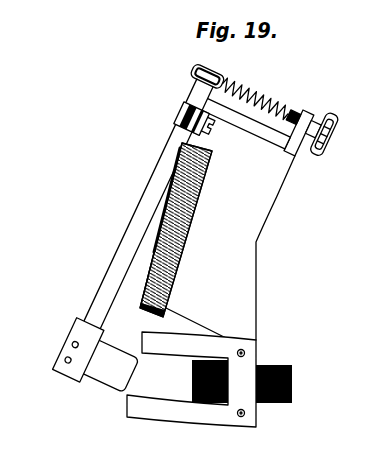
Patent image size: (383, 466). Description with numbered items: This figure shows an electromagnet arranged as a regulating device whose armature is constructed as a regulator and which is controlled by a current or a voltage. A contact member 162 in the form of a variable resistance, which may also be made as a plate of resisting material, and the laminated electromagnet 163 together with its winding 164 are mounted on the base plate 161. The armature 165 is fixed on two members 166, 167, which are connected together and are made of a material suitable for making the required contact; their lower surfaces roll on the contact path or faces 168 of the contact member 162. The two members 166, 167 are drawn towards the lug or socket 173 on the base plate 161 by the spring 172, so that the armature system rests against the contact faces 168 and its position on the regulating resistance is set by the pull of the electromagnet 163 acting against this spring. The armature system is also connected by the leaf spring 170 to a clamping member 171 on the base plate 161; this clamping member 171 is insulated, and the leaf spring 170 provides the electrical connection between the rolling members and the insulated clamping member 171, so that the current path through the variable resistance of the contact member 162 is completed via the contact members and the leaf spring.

The base plate 161 is at (250, 258).
The contact member 162 is at (158, 221).
The laminated electromagnet 163 is at (248, 362).
The winding 164 is at (293, 382).
The armature 165 is at (100, 372).
The member 166 is at (163, 167).
The member 167 is at (113, 268).
The contact path or faces 168 is at (148, 283).
The leaf spring 170 is at (156, 206).
The clamping member 171 is at (182, 124).
The spring 172 is at (260, 100).
The lug or socket 173 is at (307, 112).